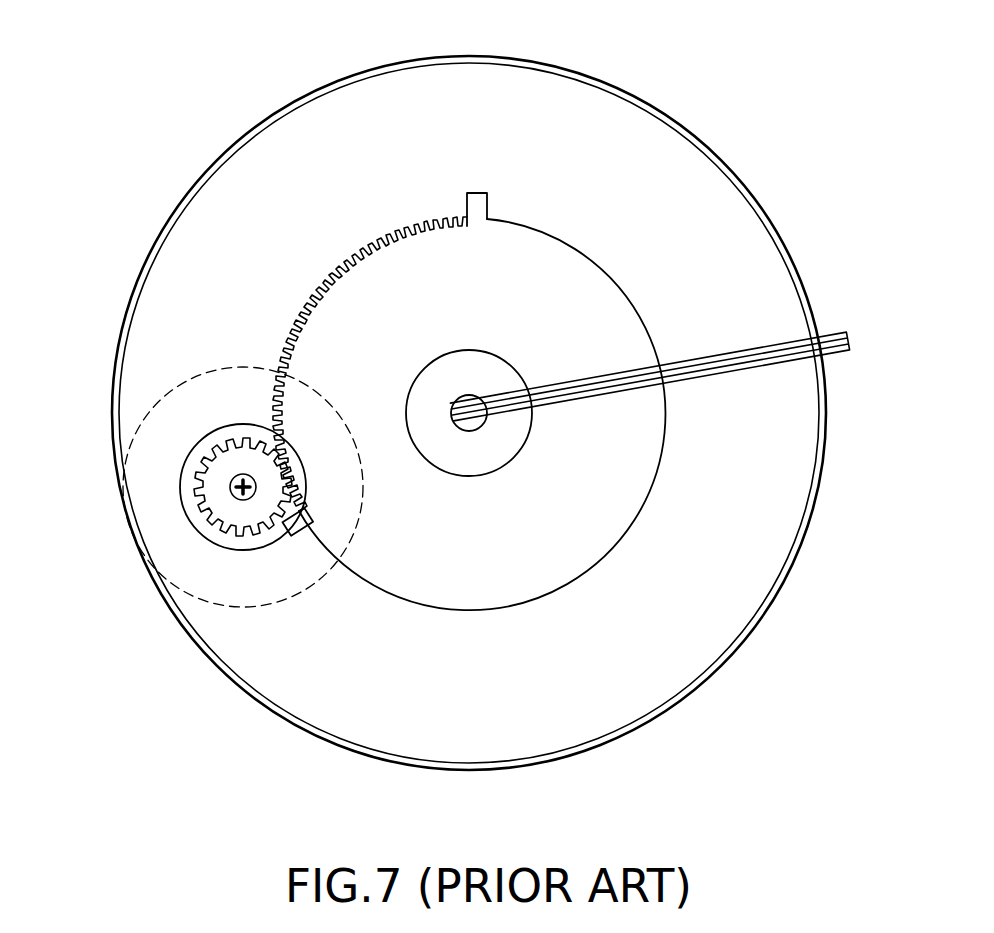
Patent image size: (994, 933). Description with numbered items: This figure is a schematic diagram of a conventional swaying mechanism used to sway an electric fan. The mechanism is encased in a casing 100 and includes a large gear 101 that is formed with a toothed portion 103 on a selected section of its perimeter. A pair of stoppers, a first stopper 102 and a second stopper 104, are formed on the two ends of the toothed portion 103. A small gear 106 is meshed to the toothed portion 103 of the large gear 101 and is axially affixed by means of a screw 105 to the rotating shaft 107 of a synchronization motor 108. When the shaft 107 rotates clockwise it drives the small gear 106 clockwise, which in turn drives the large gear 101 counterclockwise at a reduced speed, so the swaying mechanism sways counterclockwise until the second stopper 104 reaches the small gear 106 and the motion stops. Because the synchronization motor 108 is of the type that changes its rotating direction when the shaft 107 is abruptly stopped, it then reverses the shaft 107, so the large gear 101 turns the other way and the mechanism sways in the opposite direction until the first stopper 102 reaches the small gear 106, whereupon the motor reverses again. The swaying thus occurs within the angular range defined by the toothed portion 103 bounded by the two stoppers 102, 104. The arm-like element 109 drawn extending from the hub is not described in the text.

The casing 100 is at (316, 88).
The large gear 101 is at (541, 226).
The first stopper 102 is at (474, 193).
The toothed portion 103 is at (345, 268).
The second stopper 104 is at (300, 528).
The screw 105 is at (237, 497).
The small gear 106 is at (219, 502).
The rotating shaft 107 is at (188, 472).
The synchronization motor 108 is at (181, 388).
The pointer arm 109 is at (774, 369).